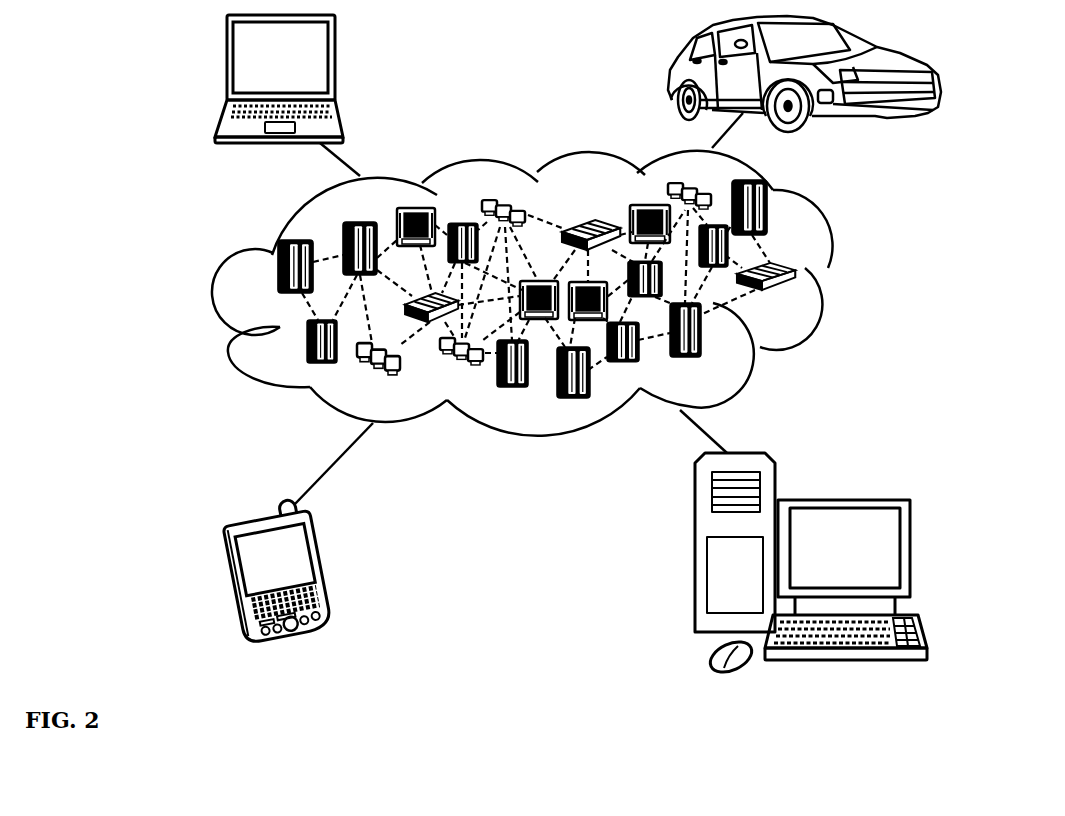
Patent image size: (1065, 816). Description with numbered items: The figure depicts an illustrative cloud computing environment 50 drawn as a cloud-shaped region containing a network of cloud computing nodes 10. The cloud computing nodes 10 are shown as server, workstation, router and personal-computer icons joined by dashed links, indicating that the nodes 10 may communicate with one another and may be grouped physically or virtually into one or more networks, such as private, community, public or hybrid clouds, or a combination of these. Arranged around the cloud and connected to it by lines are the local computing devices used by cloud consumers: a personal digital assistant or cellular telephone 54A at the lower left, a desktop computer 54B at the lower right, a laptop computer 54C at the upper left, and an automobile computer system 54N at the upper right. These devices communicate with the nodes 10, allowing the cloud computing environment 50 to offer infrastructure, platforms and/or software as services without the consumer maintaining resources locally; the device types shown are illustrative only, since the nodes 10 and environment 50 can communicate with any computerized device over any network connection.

The cloud computing nodes 10 is at (805, 299).
The cloud computing environment 50 is at (845, 273).
The personal digital assistant (PDA) or cellular telephone 54A is at (327, 565).
The desktop computer 54B is at (842, 500).
The laptop computer 54C is at (335, 62).
The automobile computer system 54N is at (672, 72).